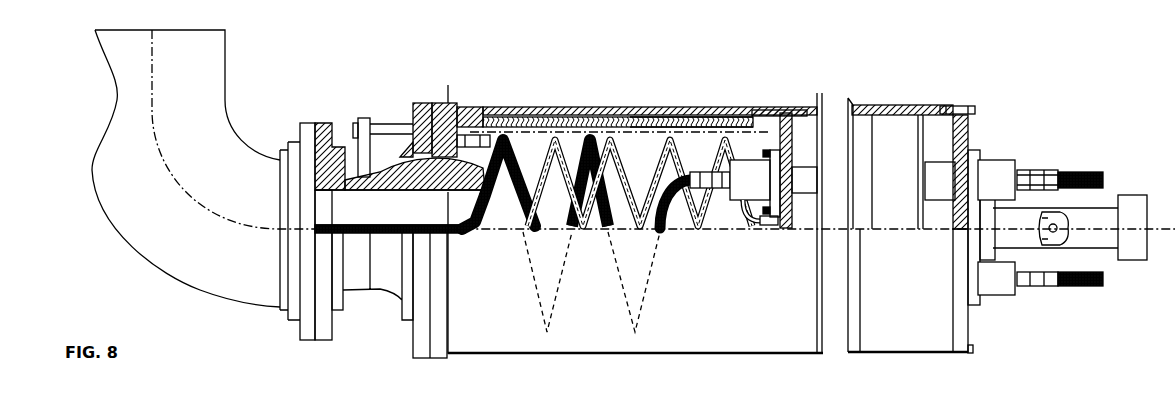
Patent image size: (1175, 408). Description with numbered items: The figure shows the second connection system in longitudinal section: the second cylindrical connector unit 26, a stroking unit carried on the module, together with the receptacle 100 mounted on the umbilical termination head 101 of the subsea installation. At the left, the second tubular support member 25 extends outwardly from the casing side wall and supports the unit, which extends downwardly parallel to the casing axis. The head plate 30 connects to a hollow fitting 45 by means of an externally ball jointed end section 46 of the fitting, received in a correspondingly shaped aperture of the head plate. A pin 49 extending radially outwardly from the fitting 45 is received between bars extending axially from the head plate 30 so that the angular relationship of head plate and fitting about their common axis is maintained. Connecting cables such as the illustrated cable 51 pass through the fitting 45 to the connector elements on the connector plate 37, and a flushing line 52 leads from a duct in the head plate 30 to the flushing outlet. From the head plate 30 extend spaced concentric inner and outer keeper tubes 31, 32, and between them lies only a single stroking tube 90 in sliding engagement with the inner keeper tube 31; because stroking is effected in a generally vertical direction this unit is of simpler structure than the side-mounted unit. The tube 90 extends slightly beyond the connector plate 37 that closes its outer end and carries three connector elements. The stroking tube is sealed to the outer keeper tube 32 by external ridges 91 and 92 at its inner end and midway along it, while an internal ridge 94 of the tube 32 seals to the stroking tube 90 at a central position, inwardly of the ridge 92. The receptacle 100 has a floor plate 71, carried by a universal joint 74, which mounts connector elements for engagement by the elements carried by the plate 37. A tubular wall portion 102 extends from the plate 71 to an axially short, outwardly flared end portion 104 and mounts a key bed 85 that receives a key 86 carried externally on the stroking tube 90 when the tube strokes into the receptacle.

The second tubular support member 25 is at (238, 280).
The hollow fitting 45 is at (352, 290).
The head plate 30 is at (425, 329).
The second cylindrical connector unit 26 is at (572, 363).
The pin 49 is at (358, 152).
The externally ball jointed end section 46 is at (410, 155).
The external ridge 91 is at (485, 114).
The outer keeper tube 32 is at (609, 107).
The external ridge 92 is at (676, 116).
The internal ridge 94 is at (644, 115).
The connecting cable 51 is at (607, 233).
The inner keeper tube 31 is at (544, 135).
The flushing line 52 is at (700, 231).
The stroking tube 90 is at (738, 107).
The key 86 is at (789, 110).
The connector plate 37 is at (795, 137).
The outwardly flared end portion 104 is at (855, 353).
The receptacle 100 is at (949, 363).
The tubular wall portion 102 is at (923, 108).
The key bed 85 is at (948, 122).
The floor plate 71 is at (965, 128).
The umbilical termination head 101 is at (1138, 212).
The universal joint 74 is at (1068, 246).